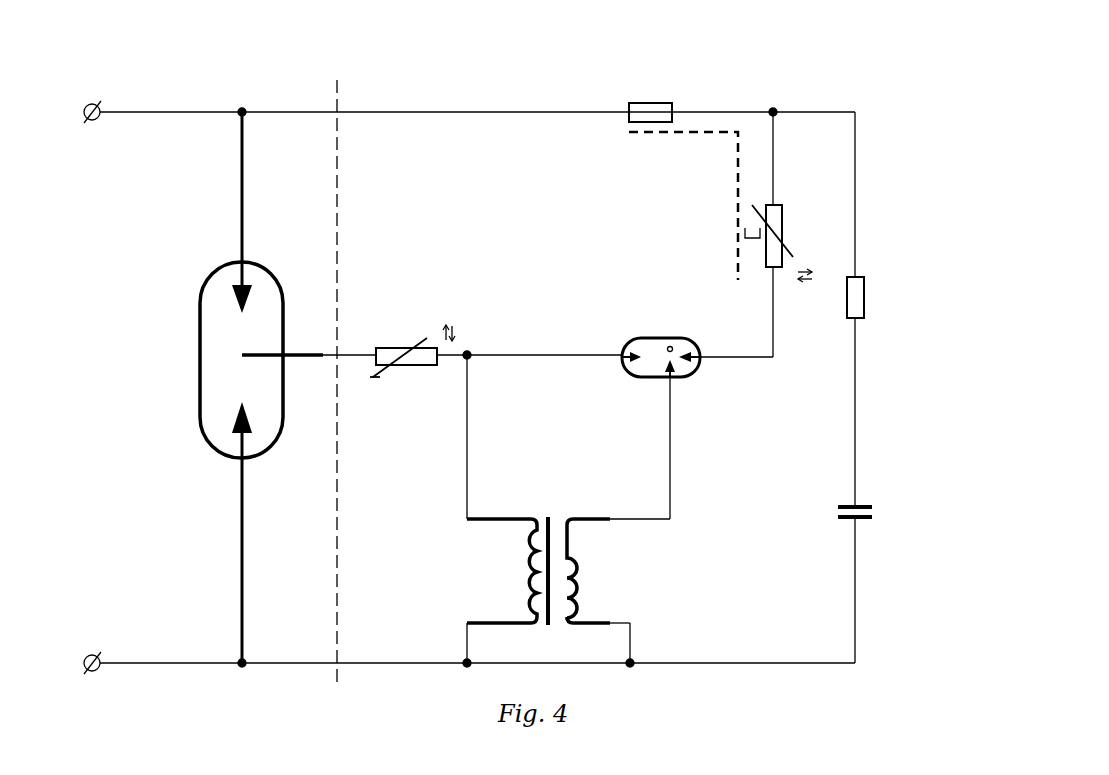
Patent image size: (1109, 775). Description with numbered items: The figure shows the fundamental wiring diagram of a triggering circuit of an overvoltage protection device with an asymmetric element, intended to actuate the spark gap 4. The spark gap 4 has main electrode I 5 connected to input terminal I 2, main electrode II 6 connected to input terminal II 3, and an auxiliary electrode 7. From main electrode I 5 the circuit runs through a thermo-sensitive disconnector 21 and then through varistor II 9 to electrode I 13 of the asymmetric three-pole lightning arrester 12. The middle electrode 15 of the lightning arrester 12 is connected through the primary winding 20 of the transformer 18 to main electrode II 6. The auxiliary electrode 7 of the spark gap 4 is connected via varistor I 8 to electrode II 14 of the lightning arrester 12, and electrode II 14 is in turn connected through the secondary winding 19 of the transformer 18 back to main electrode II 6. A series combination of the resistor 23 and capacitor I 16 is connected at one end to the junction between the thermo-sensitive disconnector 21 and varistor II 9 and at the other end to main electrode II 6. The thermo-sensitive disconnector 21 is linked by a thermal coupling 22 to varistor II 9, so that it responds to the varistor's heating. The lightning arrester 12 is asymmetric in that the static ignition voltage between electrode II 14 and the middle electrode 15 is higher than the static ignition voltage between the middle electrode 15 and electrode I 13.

The input terminal I 2 is at (139, 138).
The input terminal II 3 is at (144, 623).
The spark gap 4 is at (191, 360).
The main electrode I 5 is at (180, 212).
The main electrode II 6 is at (180, 532).
The auxiliary electrode 7 is at (328, 258).
The varistor I 8 is at (433, 276).
The varistor II 9 is at (849, 192).
The asymmetric three-pole lightning arrester 12 is at (631, 308).
The electrode I 13 is at (744, 390).
The electrode II 14 is at (575, 317).
The middle electrode 15 is at (738, 439).
The capacitor I 16 is at (900, 459).
The transformer 18 is at (595, 512).
The secondary winding 19 is at (452, 571).
The primary winding 20 is at (656, 578).
The thermo-sensitive disconnector 21 is at (590, 154).
The thermal coupling 22 is at (659, 206).
The resistor 23 is at (902, 267).